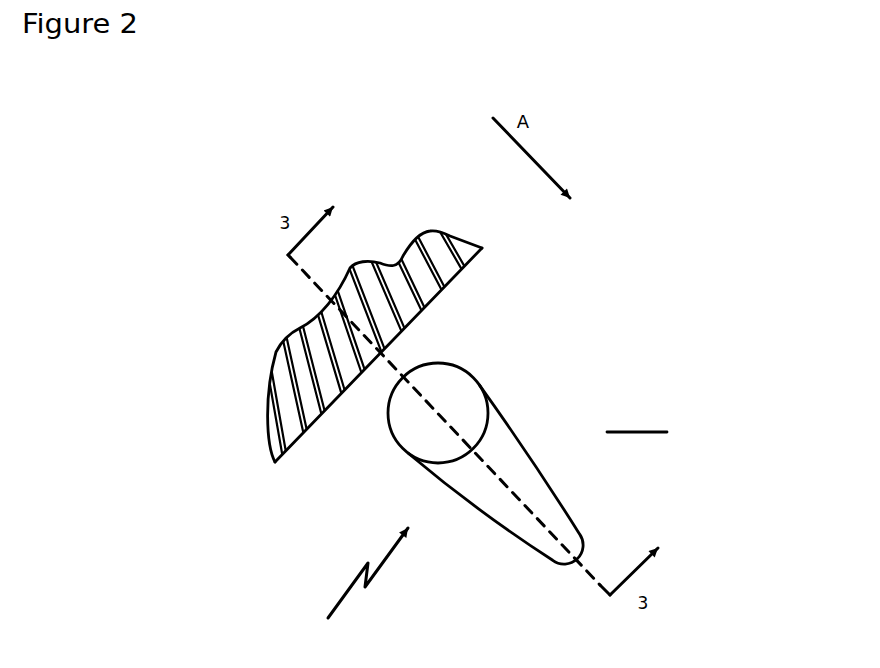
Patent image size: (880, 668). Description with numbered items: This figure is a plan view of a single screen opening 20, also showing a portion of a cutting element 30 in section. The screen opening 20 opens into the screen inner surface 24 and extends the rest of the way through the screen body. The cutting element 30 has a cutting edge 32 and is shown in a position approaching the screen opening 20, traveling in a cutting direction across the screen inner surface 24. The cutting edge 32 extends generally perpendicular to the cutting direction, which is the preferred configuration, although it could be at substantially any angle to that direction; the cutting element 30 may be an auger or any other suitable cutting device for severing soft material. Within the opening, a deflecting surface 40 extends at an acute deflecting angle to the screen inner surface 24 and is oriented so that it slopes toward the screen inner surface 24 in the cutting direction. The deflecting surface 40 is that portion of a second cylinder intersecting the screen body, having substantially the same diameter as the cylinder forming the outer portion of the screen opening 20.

The screen opening 20 is at (352, 577).
The screen inner surface 24 is at (637, 419).
The cutting element 30 is at (271, 410).
The cutting edge 32 is at (307, 432).
The deflecting surface 40 is at (510, 457).